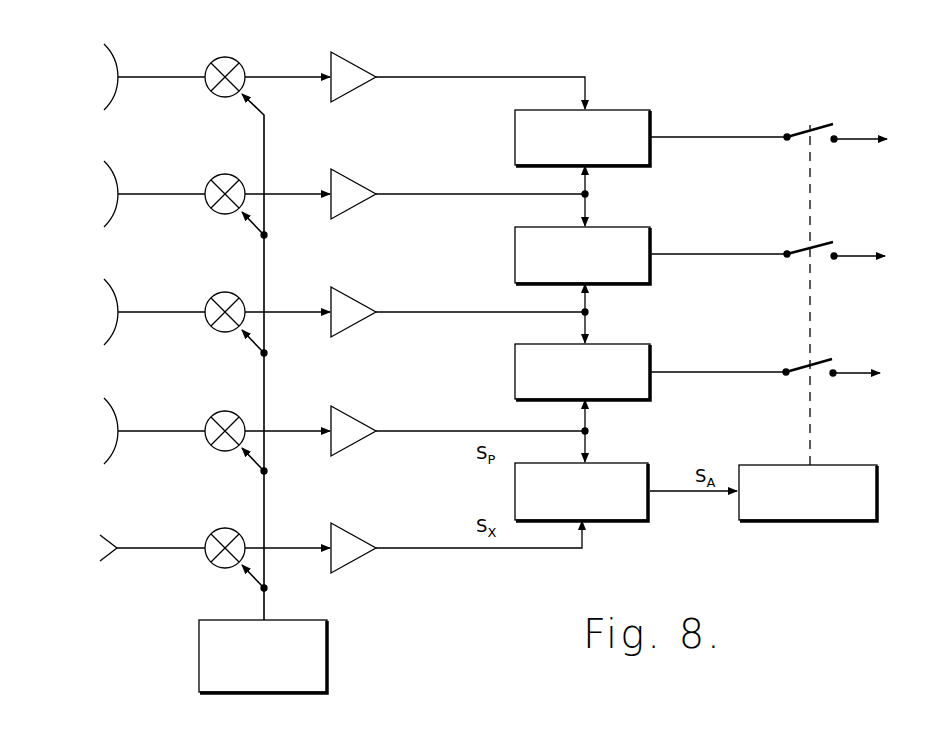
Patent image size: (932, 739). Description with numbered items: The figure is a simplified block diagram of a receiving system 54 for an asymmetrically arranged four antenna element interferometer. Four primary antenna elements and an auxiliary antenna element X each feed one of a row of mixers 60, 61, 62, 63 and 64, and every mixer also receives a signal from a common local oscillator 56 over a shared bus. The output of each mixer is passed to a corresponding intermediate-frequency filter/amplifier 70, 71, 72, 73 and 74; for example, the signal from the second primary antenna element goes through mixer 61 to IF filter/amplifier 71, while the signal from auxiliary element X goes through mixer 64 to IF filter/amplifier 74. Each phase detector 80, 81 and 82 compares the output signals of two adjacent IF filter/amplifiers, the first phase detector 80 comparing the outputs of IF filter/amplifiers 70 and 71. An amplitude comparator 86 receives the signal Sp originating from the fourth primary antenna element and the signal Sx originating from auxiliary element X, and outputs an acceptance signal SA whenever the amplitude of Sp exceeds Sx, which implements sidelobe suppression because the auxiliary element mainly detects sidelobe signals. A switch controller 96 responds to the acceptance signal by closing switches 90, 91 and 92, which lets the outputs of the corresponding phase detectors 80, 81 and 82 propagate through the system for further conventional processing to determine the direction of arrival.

The receiving system 54 is at (86, 40).
The common local oscillator 56 is at (328, 682).
The mixer 60 is at (242, 64).
The mixer 61 is at (236, 176).
The mixer 62 is at (236, 294).
The mixer 63 is at (236, 412).
The mixer 64 is at (232, 530).
The intermediate-frequency filter/amplifier 70 is at (358, 68).
The intermediate-frequency filter/amplifier 71 is at (356, 186).
The intermediate-frequency filter/amplifier 72 is at (354, 304).
The intermediate-frequency filter/amplifier 73 is at (344, 418).
The intermediate-frequency filter/amplifier 74 is at (348, 535).
The phase detector 80 is at (634, 110).
The phase detector 81 is at (643, 226).
The phase detector 82 is at (640, 342).
The amplitude comparator 86 is at (635, 464).
The switch 90 is at (796, 126).
The switch 91 is at (796, 246).
The switch 92 is at (796, 364).
The switch controller 96 is at (878, 518).